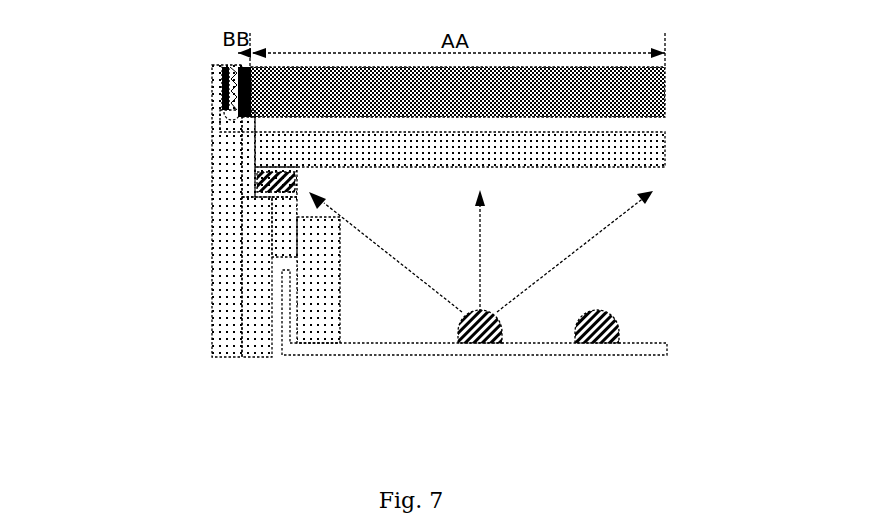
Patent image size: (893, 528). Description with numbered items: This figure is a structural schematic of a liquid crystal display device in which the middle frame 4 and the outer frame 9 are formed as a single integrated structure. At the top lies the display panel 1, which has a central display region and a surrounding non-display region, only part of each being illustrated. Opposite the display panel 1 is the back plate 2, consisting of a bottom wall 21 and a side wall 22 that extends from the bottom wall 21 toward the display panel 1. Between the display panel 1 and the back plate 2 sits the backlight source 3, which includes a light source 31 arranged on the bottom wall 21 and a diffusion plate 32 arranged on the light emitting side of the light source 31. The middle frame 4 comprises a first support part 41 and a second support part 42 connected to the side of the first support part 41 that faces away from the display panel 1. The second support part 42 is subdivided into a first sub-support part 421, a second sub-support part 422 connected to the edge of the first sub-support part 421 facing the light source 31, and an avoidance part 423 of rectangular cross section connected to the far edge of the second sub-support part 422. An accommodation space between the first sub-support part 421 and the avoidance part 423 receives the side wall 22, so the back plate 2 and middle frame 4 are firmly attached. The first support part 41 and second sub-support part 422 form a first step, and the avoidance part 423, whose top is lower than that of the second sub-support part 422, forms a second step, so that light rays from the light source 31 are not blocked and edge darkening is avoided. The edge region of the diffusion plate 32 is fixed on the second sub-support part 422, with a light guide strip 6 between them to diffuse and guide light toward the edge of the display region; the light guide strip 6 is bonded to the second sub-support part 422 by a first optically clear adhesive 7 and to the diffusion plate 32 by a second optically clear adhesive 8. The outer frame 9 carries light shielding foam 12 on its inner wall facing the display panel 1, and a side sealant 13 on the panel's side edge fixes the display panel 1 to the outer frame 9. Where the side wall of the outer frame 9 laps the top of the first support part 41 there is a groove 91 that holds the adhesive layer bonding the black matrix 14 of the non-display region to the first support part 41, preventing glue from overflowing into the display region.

The display panel 1 is at (665, 92).
The back plate 2 is at (460, 366).
The bottom wall 21 is at (398, 350).
The side wall 22 is at (288, 302).
The backlight source 3 is at (518, 237).
The light source 31 is at (613, 317).
The diffusion plate 32 is at (665, 148).
The middle frame 4 is at (191, 237).
The first support part 41 is at (242, 155).
The second support part 42 is at (213, 277).
The first sub-support part 421 is at (272, 235).
The second sub-support part 422 is at (242, 212).
The avoidance part 423 is at (297, 260).
The light guide strip 6 is at (295, 182).
The first optically clear adhesive 7 is at (255, 194).
The second optically clear adhesive 8 is at (257, 168).
The outer frame 9 is at (212, 305).
The groove 91 is at (212, 125).
The light shielding foam 12 is at (212, 77).
The side sealant 13 is at (171, 89).
The black matrix 14 is at (212, 103).